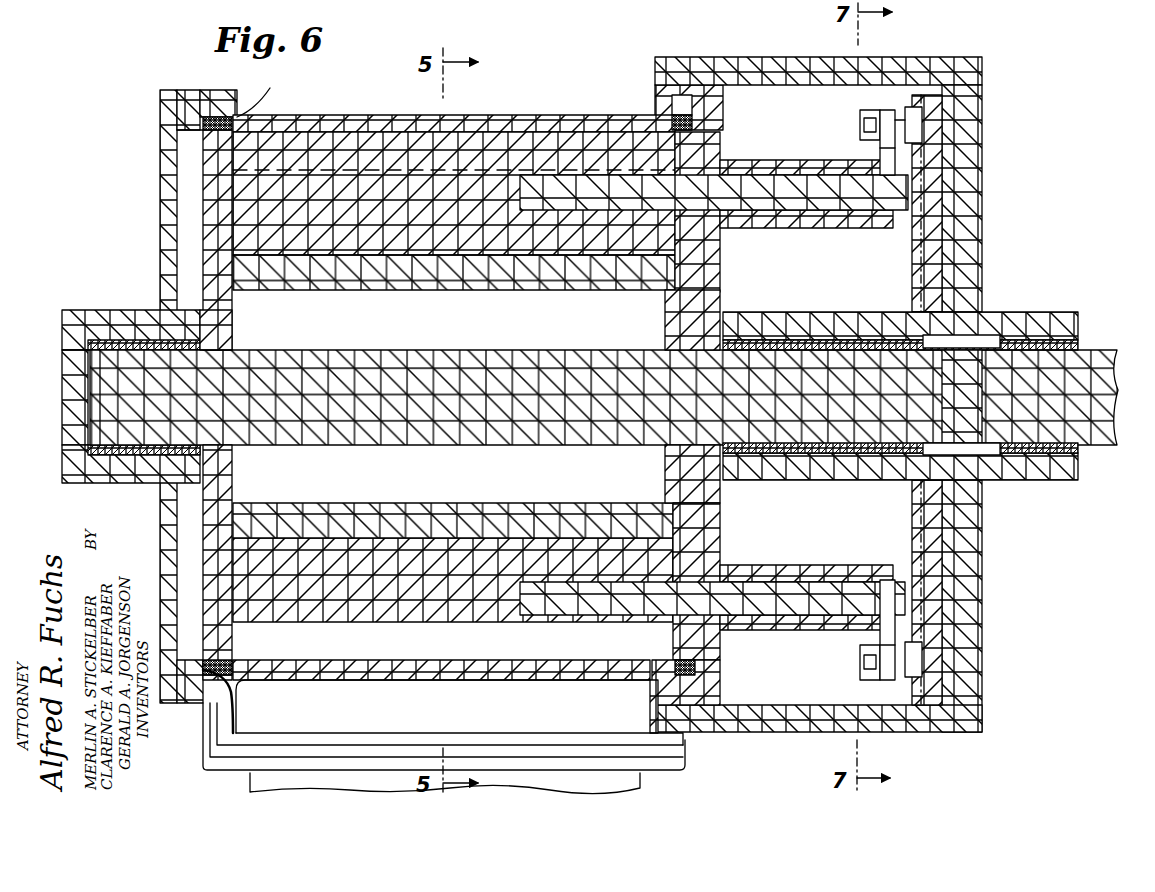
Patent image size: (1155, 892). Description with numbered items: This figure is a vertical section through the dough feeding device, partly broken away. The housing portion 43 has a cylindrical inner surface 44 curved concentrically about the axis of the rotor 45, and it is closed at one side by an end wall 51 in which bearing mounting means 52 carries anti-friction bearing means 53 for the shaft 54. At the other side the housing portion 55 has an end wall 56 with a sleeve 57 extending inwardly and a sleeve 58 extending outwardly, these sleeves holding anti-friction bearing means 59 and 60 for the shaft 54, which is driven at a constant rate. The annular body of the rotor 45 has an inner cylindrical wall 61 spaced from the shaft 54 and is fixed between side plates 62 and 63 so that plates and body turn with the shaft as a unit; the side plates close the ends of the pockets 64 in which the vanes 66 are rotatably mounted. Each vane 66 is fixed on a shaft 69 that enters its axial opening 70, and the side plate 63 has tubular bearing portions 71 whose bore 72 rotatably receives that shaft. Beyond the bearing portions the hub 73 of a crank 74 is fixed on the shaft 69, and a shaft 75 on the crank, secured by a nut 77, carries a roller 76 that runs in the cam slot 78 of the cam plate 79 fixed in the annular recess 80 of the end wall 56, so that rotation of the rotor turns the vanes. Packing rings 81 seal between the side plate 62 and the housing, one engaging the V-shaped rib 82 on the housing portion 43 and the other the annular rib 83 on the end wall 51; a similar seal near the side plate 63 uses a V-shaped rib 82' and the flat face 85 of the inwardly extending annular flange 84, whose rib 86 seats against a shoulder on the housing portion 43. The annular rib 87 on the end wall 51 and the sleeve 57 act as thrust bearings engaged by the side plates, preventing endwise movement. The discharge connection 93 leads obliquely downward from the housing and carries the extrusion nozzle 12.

The nozzle 12 is at (250, 782).
The housing portion 43 is at (340, 115).
The cylindrical inner surface 44 is at (455, 135).
The rotor 45 is at (548, 285).
The end wall 51 is at (170, 203).
The bearing mounting means 52 is at (105, 322).
The anti-friction bearing means 53 is at (138, 455).
The shaft 54 is at (345, 350).
The housing portion 55 is at (765, 68).
The end wall 56 is at (975, 232).
The sleeve 57 is at (853, 313).
The sleeve 58 is at (1055, 312).
The anti-friction bearing means 59 is at (792, 333).
The anti-friction bearing means 60 is at (1030, 480).
The inner cylindrical wall 61 is at (470, 290).
The side plate 62 is at (210, 190).
The side plate 63 is at (710, 295).
The pockets 64 is at (420, 255).
The vanes 66 is at (515, 138).
The shaft 69 is at (773, 200).
The axial opening 70 is at (610, 215).
The tubular bearing portions 71 is at (795, 163).
The bore 72 is at (828, 228).
The hub 73 is at (880, 228).
The crank 74 is at (885, 150).
The shaft 75 is at (862, 125).
The roller 76 is at (915, 125).
The nut 77 is at (877, 110).
The cam slot 78 is at (918, 135).
The cam plate 79 is at (935, 172).
The annular recess 80 is at (925, 700).
The packing rings 81 is at (237, 115).
The V-shaped rib 82 is at (426, 404).
The V-shaped rib 82' is at (623, 93).
The annular rib 83 is at (203, 121).
The annular flange 84 is at (723, 99).
The flat face 85 is at (723, 128).
The rib 86 is at (668, 125).
The annular rib 87 is at (205, 327).
The discharge connection 93 is at (635, 722).